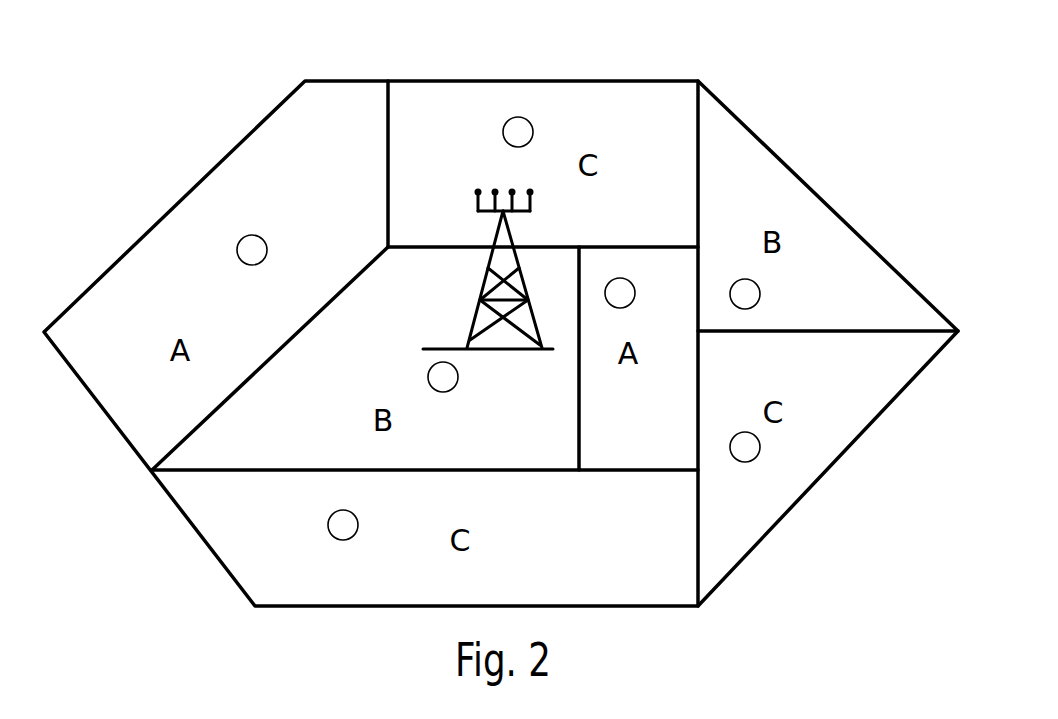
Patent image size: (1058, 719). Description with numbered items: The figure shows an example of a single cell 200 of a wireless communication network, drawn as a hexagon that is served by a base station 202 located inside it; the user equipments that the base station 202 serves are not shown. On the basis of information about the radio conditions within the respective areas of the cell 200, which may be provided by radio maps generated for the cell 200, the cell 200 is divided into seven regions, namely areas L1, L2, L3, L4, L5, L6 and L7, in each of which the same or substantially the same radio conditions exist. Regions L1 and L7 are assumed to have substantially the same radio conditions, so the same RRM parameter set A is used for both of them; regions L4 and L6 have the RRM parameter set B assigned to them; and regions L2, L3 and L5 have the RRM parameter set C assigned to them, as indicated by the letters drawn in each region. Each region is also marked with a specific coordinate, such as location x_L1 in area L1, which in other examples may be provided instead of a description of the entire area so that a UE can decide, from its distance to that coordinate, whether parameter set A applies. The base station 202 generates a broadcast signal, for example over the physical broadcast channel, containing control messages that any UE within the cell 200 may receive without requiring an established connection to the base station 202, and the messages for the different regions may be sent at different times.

The cell 200 is at (630, 80).
The base station 202 is at (477, 192).
The region L1 is at (184, 301).
The region L2 is at (495, 555).
The region L3 is at (812, 414).
The region L4 is at (812, 299).
The region L5 is at (594, 175).
The region L6 is at (498, 411).
The region L7 is at (637, 369).